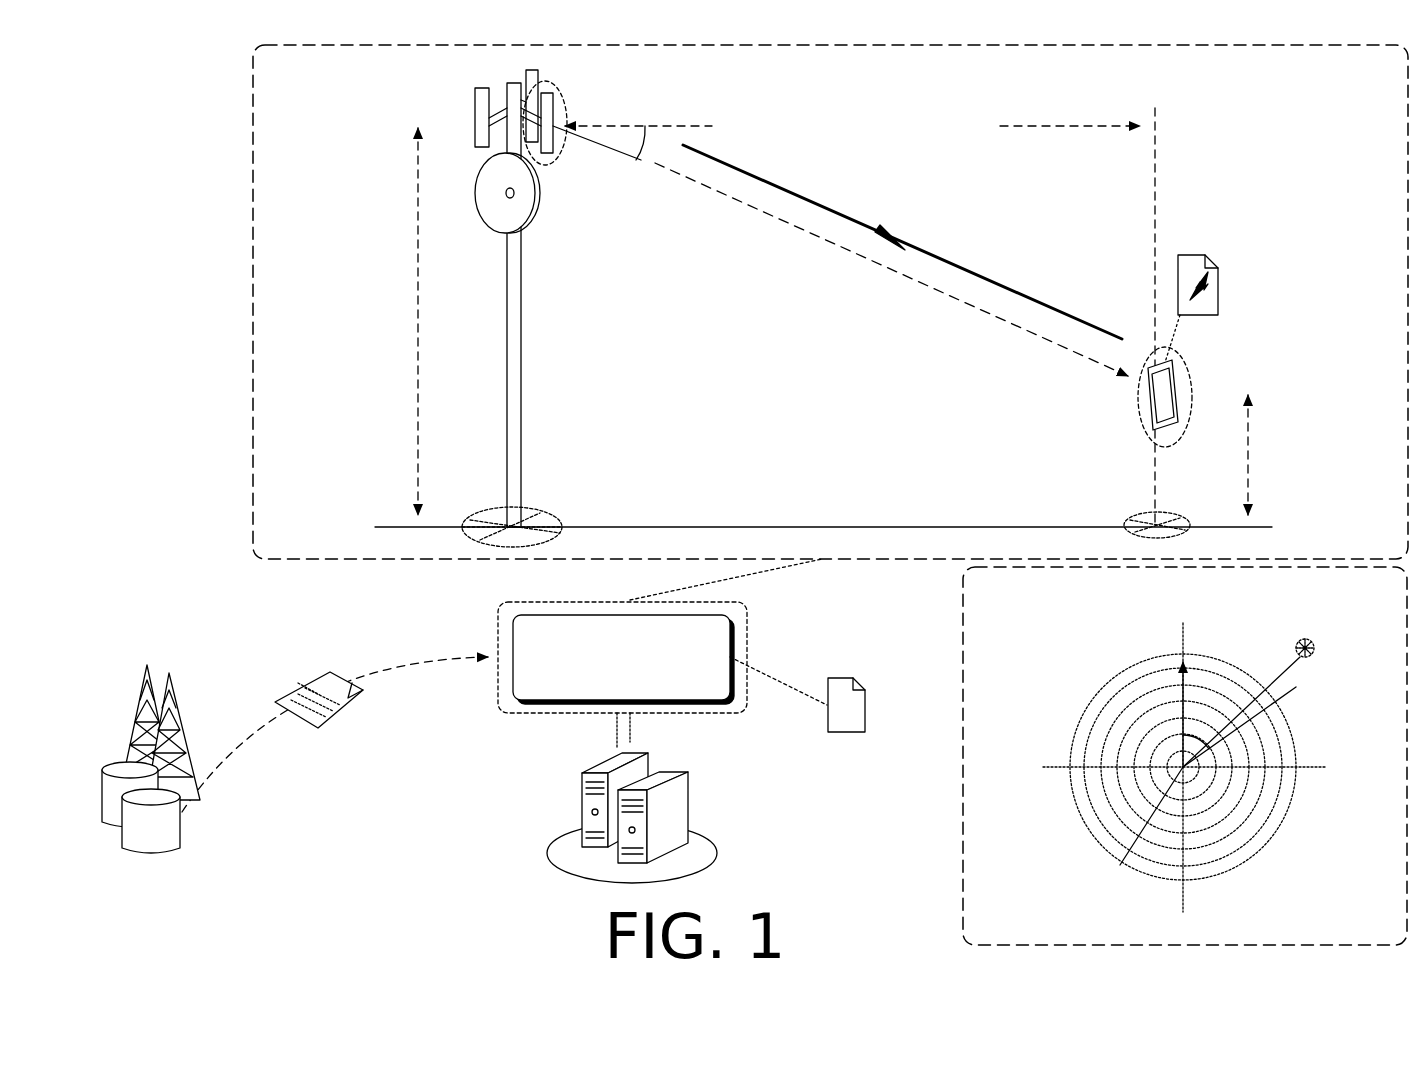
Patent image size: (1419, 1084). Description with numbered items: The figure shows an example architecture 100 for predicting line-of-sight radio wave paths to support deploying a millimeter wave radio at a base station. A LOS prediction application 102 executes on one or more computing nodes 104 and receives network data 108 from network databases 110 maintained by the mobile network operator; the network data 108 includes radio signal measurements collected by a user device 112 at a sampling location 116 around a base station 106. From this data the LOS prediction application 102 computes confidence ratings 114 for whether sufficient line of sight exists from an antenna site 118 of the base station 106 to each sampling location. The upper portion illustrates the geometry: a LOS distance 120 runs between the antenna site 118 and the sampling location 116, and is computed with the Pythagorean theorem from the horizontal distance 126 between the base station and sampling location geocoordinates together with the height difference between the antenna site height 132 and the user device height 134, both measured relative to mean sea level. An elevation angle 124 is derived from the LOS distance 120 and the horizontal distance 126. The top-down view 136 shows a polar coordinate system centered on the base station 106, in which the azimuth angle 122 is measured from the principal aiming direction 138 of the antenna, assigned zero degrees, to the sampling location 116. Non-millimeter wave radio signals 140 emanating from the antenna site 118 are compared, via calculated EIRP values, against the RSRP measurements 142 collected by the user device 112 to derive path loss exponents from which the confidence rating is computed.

The architecture 100 is at (135, 115).
The LOS prediction application 102 is at (504, 707).
The computing nodes 104 is at (592, 768).
The base station 106 is at (507, 330).
The network data 108 is at (340, 712).
The network databases 110 is at (112, 760).
The user device 112 is at (1178, 438).
The confidence ratings 114 is at (858, 678).
The sampling location 116 is at (1183, 352).
The antenna site 118 is at (560, 85).
The LOS distance 120 is at (891, 269).
The azimuth angle 122 is at (1296, 687).
The elevation angle 124 is at (652, 163).
The horizontal distance 126 is at (852, 126).
The antenna site height 132 is at (418, 290).
The user device height 134 is at (1250, 450).
The top-down view 136 is at (963, 630).
The principal aiming direction 138 is at (1180, 714).
The non-millimeter wave radio signals 140 is at (905, 237).
The RSRP measurements 142 is at (1200, 255).